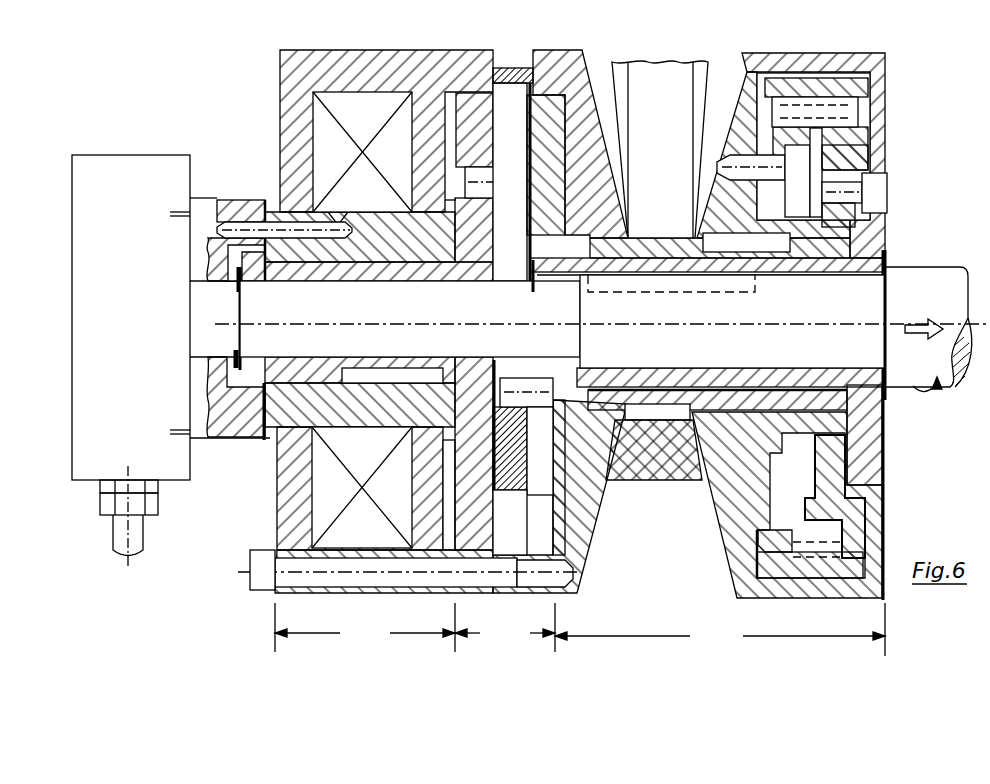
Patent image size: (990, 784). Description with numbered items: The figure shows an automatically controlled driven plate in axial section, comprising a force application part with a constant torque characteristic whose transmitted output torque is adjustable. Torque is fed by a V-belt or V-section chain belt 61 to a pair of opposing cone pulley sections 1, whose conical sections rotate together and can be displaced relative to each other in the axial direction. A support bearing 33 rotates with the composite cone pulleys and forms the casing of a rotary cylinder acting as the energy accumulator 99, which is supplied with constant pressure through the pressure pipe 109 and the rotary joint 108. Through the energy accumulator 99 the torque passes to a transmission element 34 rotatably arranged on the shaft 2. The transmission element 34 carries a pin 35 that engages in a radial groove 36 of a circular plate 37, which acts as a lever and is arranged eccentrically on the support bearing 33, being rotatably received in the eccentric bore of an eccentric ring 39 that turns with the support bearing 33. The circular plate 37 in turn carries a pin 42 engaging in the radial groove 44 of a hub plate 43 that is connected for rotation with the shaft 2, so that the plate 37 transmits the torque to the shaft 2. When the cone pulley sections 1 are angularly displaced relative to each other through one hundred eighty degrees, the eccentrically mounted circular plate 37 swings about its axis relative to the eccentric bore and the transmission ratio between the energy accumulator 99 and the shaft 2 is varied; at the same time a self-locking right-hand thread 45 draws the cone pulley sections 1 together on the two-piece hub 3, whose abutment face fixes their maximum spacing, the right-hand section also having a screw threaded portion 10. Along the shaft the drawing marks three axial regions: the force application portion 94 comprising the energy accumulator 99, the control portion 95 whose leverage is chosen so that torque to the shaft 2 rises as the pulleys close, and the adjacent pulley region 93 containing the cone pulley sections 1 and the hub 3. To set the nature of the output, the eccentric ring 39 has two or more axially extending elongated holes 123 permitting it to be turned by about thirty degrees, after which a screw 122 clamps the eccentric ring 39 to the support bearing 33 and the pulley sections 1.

The cone pulley sections 1 is at (732, 138).
The shaft 2 is at (920, 278).
The hub 3 is at (868, 497).
The screw threaded portion 10 is at (845, 530).
The support bearing 33 is at (375, 66).
The transmission element 34 is at (483, 100).
The pin 35 is at (470, 185).
The radial groove 36 is at (510, 100).
The circular plate 37 is at (545, 120).
The eccentric ring 39 is at (507, 533).
The pin 42 is at (533, 400).
The hub plate 43 is at (592, 118).
The radial groove 44 is at (542, 473).
The right-hand thread 45 is at (868, 100).
The V-section chain belt 61 is at (662, 80).
The length of housing section 93 is at (720, 629).
The force application portion 94 is at (365, 627).
The control portion 95 is at (505, 627).
The energy accumulator 99 is at (358, 486).
The rotary joint 108 is at (98, 168).
The pressure pipe 109 is at (245, 228).
The screw 122 is at (260, 580).
The elongated holes 123 is at (518, 588).